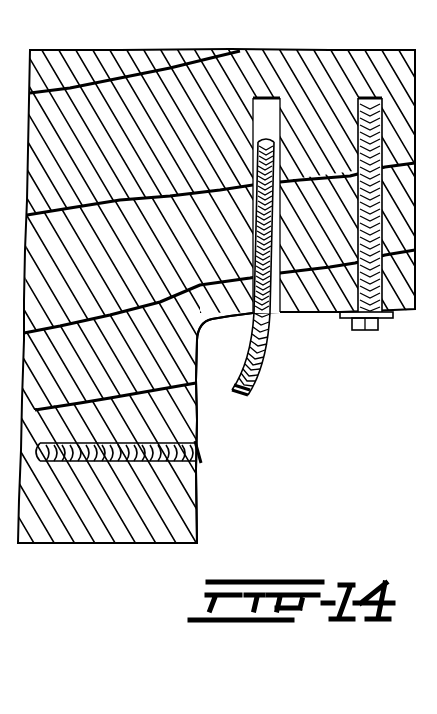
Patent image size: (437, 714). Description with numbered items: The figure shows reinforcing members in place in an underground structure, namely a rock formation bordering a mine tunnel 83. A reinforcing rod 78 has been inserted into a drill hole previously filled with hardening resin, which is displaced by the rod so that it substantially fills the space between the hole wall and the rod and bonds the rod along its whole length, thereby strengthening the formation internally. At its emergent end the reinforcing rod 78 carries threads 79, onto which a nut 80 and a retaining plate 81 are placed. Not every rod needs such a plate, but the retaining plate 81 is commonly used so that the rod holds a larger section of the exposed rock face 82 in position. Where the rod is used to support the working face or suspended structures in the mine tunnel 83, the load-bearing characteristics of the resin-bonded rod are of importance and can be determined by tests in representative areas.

The reinforcing rod 78 is at (256, 371).
The threads 79 is at (248, 393).
The nut 80 is at (378, 323).
The retaining plate 81 is at (340, 314).
The exposed rock face 82 is at (200, 418).
The mine tunnel 83 is at (205, 501).